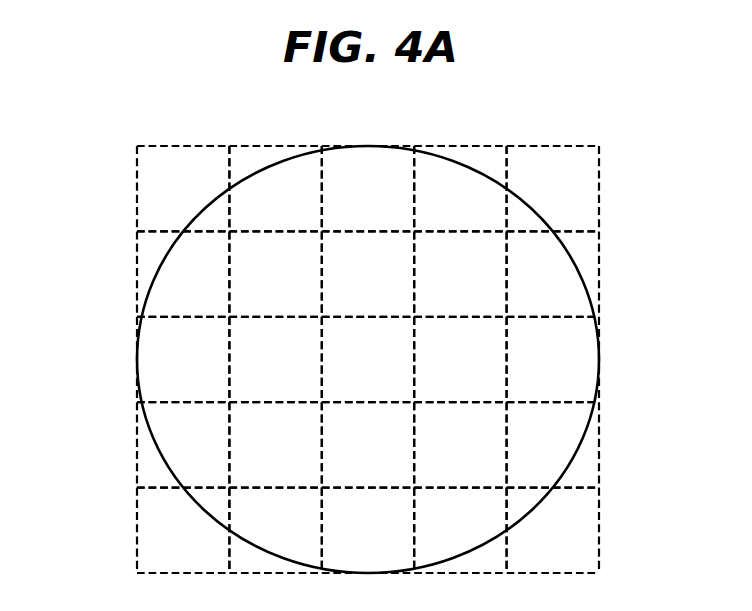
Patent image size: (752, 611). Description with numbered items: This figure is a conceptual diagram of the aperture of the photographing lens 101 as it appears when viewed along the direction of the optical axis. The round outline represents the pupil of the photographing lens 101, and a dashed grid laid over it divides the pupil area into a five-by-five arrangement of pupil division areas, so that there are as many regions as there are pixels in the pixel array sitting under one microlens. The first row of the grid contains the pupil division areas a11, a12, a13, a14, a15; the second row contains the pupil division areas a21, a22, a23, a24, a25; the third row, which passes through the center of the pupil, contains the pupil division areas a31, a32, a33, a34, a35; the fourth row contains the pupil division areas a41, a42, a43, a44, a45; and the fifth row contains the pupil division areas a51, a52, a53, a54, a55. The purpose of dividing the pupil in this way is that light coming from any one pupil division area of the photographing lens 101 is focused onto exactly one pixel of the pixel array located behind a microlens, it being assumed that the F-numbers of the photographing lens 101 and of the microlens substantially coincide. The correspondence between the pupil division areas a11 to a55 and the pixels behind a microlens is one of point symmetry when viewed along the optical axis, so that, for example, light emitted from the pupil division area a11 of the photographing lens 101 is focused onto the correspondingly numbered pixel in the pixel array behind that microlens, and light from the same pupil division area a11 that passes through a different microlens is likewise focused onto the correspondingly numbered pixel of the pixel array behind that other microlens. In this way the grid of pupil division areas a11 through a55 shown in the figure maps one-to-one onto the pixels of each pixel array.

The photographing lens 101 is at (142, 300).
The pupil division area a11 is at (183, 188).
The pupil division area a12 is at (275, 188).
The pupil division area a13 is at (368, 188).
The pupil division area a14 is at (460, 188).
The pupil division area a15 is at (553, 188).
The pupil division area a21 is at (183, 273).
The pupil division area a22 is at (275, 273).
The pupil division area a23 is at (368, 273).
The pupil division area a24 is at (460, 273).
The pupil division area a25 is at (553, 273).
The pupil division area a31 is at (183, 359).
The pupil division area a32 is at (275, 359).
The pupil division area a33 is at (368, 359).
The pupil division area a34 is at (460, 359).
The pupil division area a35 is at (553, 359).
The pupil division area a41 is at (183, 444).
The pupil division area a42 is at (275, 444).
The pupil division area a43 is at (368, 444).
The pupil division area a44 is at (460, 444).
The pupil division area a45 is at (553, 444).
The pupil division area a51 is at (183, 530).
The pupil division area a52 is at (275, 530).
The pupil division area a53 is at (368, 530).
The pupil division area a54 is at (460, 530).
The pupil division area a55 is at (553, 530).